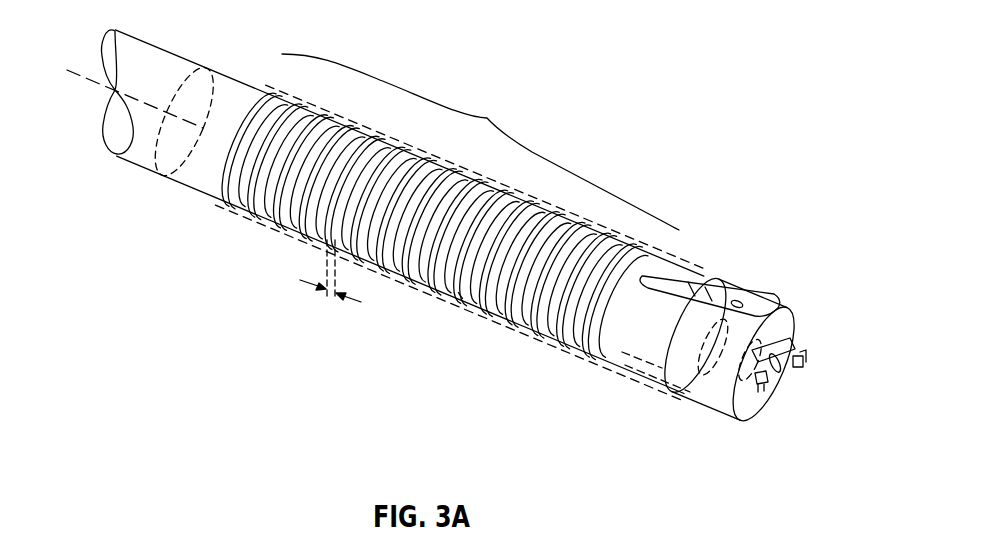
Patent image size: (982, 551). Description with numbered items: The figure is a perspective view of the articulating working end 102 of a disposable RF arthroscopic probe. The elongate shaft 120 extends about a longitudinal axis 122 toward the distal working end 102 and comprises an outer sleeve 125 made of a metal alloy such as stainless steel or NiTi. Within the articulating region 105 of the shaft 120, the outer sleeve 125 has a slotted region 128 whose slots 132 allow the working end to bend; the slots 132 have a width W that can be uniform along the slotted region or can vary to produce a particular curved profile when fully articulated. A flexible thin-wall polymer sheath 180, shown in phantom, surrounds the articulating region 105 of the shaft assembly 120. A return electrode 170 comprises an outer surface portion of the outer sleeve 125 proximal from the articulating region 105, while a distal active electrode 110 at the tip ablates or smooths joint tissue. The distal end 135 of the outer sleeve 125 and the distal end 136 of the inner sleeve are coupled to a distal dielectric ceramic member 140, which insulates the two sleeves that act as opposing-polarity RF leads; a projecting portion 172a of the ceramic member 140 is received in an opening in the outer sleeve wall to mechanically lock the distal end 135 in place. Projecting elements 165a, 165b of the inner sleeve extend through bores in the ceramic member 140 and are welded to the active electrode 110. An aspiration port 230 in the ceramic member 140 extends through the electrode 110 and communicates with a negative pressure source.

The working end 102 is at (684, 93).
The articulating region 105 is at (480, 142).
The active electrode 110 is at (806, 355).
The elongate shaft 120 is at (191, 25).
The longitudinal axis 122 is at (90, 84).
The outer sleeve 125 is at (145, 168).
The slotted region 128 is at (476, 294).
The slots 132 is at (418, 281).
The distal end of outer sleeve 135 is at (627, 366).
The distal end of inner sleeve 136 is at (697, 384).
The distal dielectric member 140 is at (780, 328).
The first projecting element 165a is at (806, 368).
The second projecting element 165b is at (753, 407).
The return electrode 170 is at (177, 67).
The projecting portion 172a is at (687, 273).
The thin-wall sheath 180 is at (650, 248).
The aspiration port 230 is at (790, 379).
The slot width W is at (362, 302).